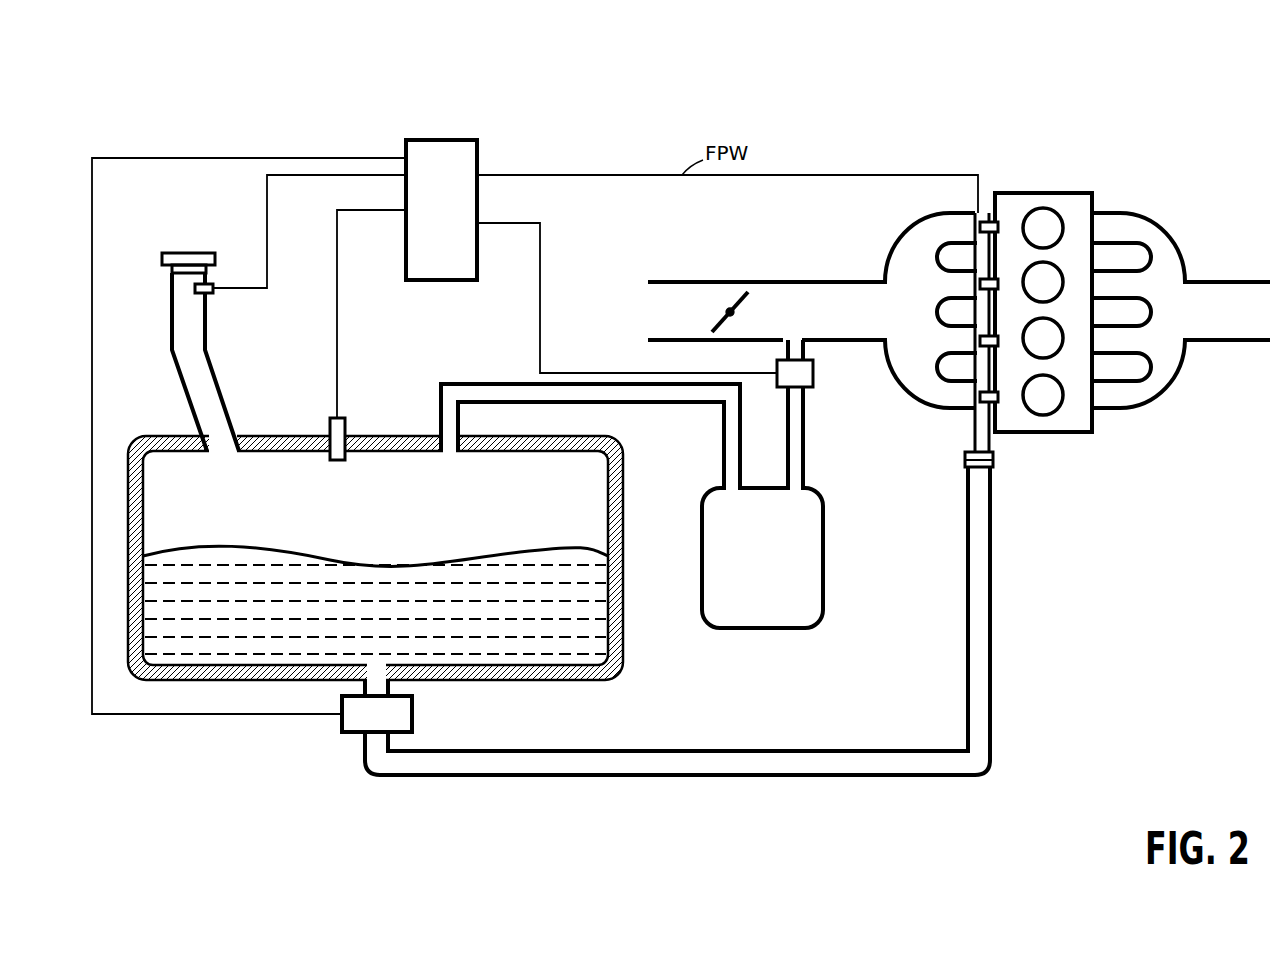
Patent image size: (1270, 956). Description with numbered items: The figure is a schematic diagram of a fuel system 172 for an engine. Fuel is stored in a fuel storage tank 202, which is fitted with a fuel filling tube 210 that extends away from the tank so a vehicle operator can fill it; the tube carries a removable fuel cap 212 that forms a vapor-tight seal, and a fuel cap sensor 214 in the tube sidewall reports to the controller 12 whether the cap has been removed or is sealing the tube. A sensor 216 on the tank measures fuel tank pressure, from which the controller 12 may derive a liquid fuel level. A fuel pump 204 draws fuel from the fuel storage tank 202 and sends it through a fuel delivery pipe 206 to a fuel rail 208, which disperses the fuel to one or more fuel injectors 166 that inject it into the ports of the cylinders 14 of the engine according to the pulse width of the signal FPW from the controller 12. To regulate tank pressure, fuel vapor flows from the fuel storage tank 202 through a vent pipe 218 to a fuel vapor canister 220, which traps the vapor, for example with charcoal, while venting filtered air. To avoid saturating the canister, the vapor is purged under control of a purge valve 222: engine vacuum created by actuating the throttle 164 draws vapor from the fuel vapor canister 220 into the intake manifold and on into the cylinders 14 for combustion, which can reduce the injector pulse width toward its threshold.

The fuel system 172 is at (822, 80).
The controller 12 is at (440, 140).
The cylinder 14 is at (1043, 312).
The throttle 164 is at (731, 306).
The fuel injector 166 is at (984, 217).
The fuel storage tank 202 is at (623, 497).
The fuel pump 204 is at (412, 718).
The fuel delivery pipe 206 is at (682, 751).
The fuel rail 208 is at (975, 425).
The fuel filling tube 210 is at (178, 372).
The fuel cap 212 is at (180, 253).
The fuel cap sensor 214 is at (213, 290).
The sensor 216 is at (345, 428).
The vent pipe 218 is at (505, 382).
The fuel vapor canister 220 is at (823, 557).
The purge valve 222 is at (813, 378).